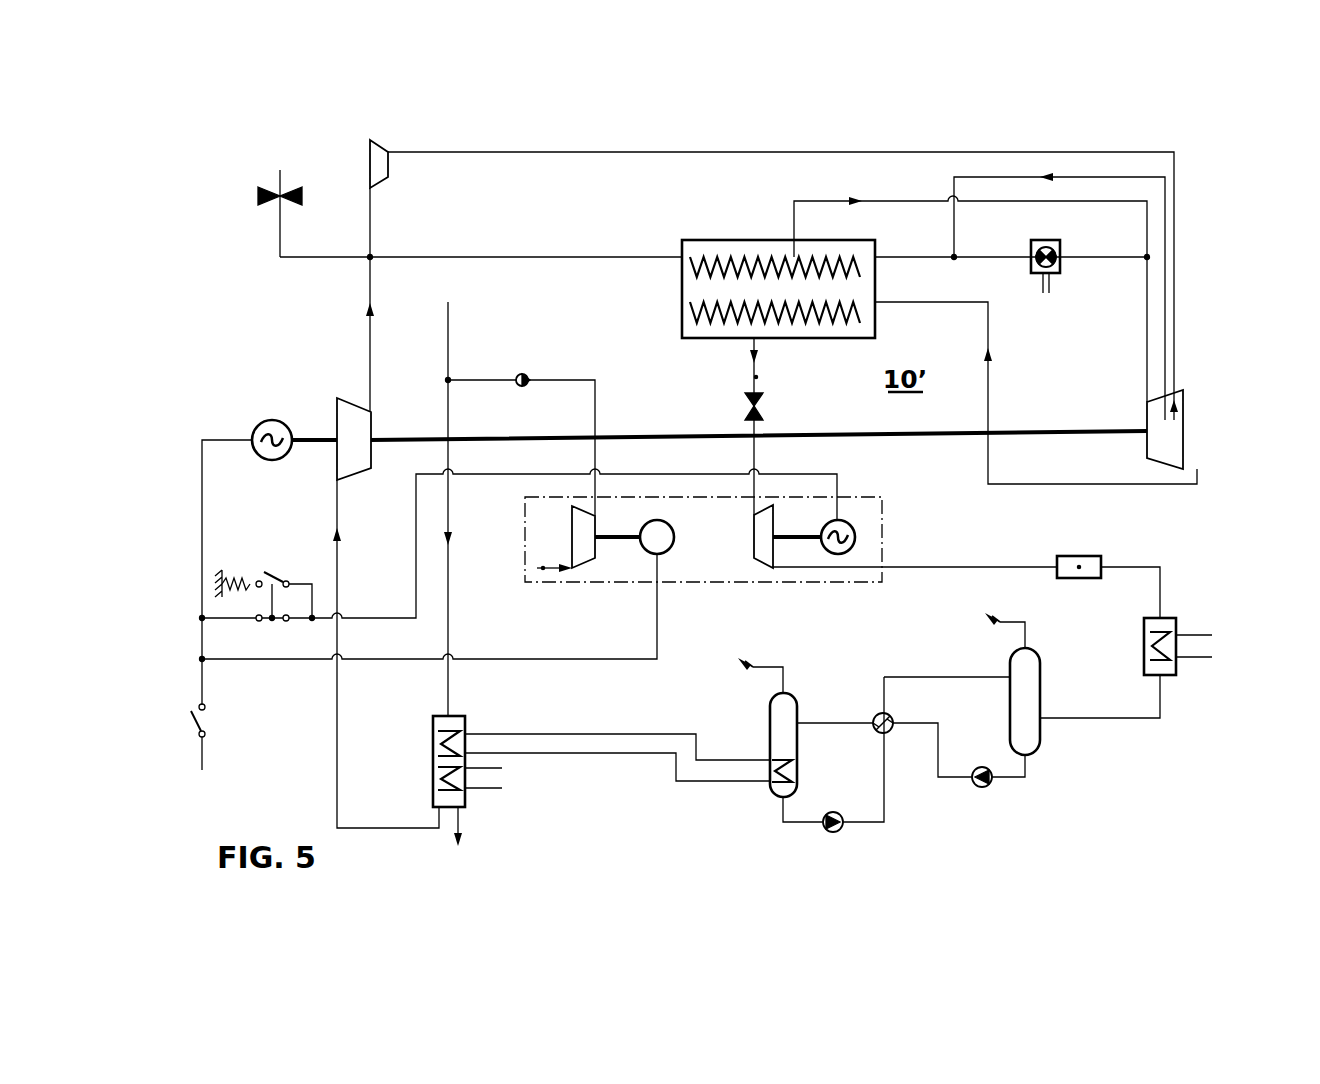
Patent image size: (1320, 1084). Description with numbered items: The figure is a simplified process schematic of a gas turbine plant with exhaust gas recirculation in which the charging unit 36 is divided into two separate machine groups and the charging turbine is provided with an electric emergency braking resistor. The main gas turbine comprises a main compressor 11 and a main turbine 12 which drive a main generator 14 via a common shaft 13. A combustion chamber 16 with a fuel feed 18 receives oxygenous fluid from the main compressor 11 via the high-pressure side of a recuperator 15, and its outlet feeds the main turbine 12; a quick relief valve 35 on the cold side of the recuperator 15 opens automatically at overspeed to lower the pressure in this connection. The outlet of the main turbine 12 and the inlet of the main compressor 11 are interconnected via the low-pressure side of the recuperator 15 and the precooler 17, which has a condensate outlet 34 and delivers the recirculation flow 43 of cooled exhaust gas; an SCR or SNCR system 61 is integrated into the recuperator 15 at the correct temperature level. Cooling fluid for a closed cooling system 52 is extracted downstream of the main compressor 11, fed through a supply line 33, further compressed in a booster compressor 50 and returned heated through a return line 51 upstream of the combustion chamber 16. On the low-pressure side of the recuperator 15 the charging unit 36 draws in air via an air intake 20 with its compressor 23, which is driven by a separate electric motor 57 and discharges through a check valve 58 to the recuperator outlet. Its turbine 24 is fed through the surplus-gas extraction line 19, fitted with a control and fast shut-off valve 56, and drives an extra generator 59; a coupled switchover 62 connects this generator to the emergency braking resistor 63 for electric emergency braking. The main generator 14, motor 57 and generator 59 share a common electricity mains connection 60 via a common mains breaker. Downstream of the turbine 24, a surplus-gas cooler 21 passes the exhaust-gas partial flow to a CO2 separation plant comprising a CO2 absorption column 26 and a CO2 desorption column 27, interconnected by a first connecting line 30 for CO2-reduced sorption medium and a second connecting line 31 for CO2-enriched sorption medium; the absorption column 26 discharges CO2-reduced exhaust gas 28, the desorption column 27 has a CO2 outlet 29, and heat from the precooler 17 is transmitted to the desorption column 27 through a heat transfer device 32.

The main compressor 11 is at (352, 423).
The main turbine 12 is at (1167, 450).
The shaft 13 is at (313, 433).
The main generator 14 is at (252, 424).
The recuperator 15 is at (724, 248).
The combustion chamber 16 is at (1056, 268).
The precooler 17 is at (457, 796).
The fuel feed 18 is at (1046, 297).
The surplus-gas extraction line 19 is at (757, 377).
The air intake 20 is at (624, 571).
The surplus-gas cooler 21 is at (1167, 667).
The compressor (charging unit) 23 is at (582, 549).
The turbine (charging unit) 24 is at (765, 549).
The CO2 absorption column 26 is at (1027, 730).
The CO2 desorption column 27 is at (782, 788).
The exhaust gas (CO2-reduced) 28 is at (987, 640).
The CO2 outlet 29 is at (744, 684).
The connecting line (CO2-reduced sorption medium) 30 is at (858, 824).
The connecting line (CO2-enriched sorption medium) 31 is at (961, 779).
The heat transfer device 32 is at (606, 755).
The supply line (cooling medium) 33 is at (907, 201).
The condensate outlet 34 is at (458, 842).
The quick relief valve 35 is at (257, 196).
The charging unit 36 is at (523, 558).
The recirculation flow (cooled exhaust gas) 43 is at (335, 748).
The booster compressor for the cooling fluid 50 is at (380, 160).
The return line for the heated cooling fluid 51 is at (1090, 177).
The closed cooling system 52 is at (1180, 392).
The control- and fast shut-off valve 56 is at (790, 406).
The motor of the charging compressor 57 is at (666, 556).
The check valve 58 is at (523, 372).
The generator of the charging turbine 59 is at (837, 578).
The electricity mains 60 is at (203, 754).
The SCR- or SNCR system 61 is at (1108, 598).
The coupled switchover to the emergency braking resistor 62 is at (278, 574).
The emergency braking resistor 63 is at (238, 574).